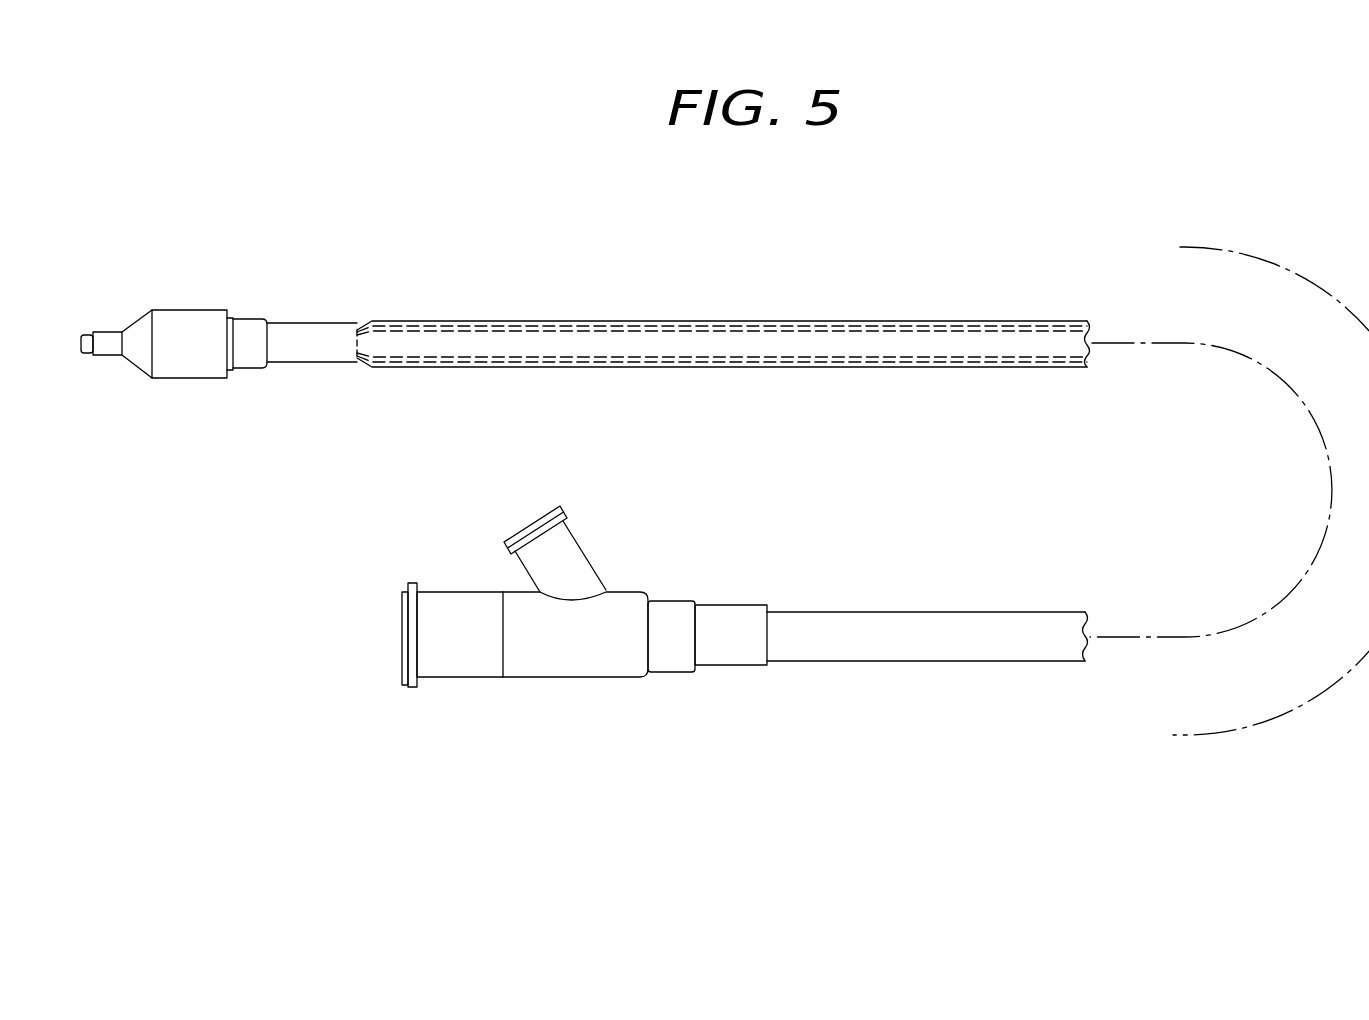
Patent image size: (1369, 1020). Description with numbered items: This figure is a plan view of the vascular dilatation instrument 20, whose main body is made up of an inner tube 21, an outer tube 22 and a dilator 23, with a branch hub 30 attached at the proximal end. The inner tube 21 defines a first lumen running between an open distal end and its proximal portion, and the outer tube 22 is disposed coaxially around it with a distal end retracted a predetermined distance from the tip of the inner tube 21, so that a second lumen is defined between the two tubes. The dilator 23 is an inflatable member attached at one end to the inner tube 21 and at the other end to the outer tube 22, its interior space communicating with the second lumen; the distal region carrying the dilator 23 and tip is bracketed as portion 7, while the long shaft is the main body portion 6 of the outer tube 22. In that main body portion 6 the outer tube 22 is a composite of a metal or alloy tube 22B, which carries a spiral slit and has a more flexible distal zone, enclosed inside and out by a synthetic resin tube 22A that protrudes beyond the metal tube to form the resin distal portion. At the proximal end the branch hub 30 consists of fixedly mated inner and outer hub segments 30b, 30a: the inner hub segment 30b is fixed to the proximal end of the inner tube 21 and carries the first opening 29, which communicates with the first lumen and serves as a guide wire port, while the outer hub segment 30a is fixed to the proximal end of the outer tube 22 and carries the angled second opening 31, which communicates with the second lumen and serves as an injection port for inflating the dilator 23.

The vascular dilatation instrument 20 is at (1013, 235).
The main body portion 6 is at (1180, 247).
The distal tip portion 7 is at (365, 255).
The inner tube 21 is at (92, 354).
The outer tube 22 is at (323, 364).
The synthetic resin tube 22A is at (522, 320).
The metal or alloy tube 22B is at (647, 328).
The dilator 23 is at (200, 350).
The first opening 29 is at (401, 636).
The branch hub 30 is at (760, 727).
The outer hub segment 30a is at (620, 630).
The inner hub segment 30b is at (452, 603).
The second opening 31 is at (518, 528).